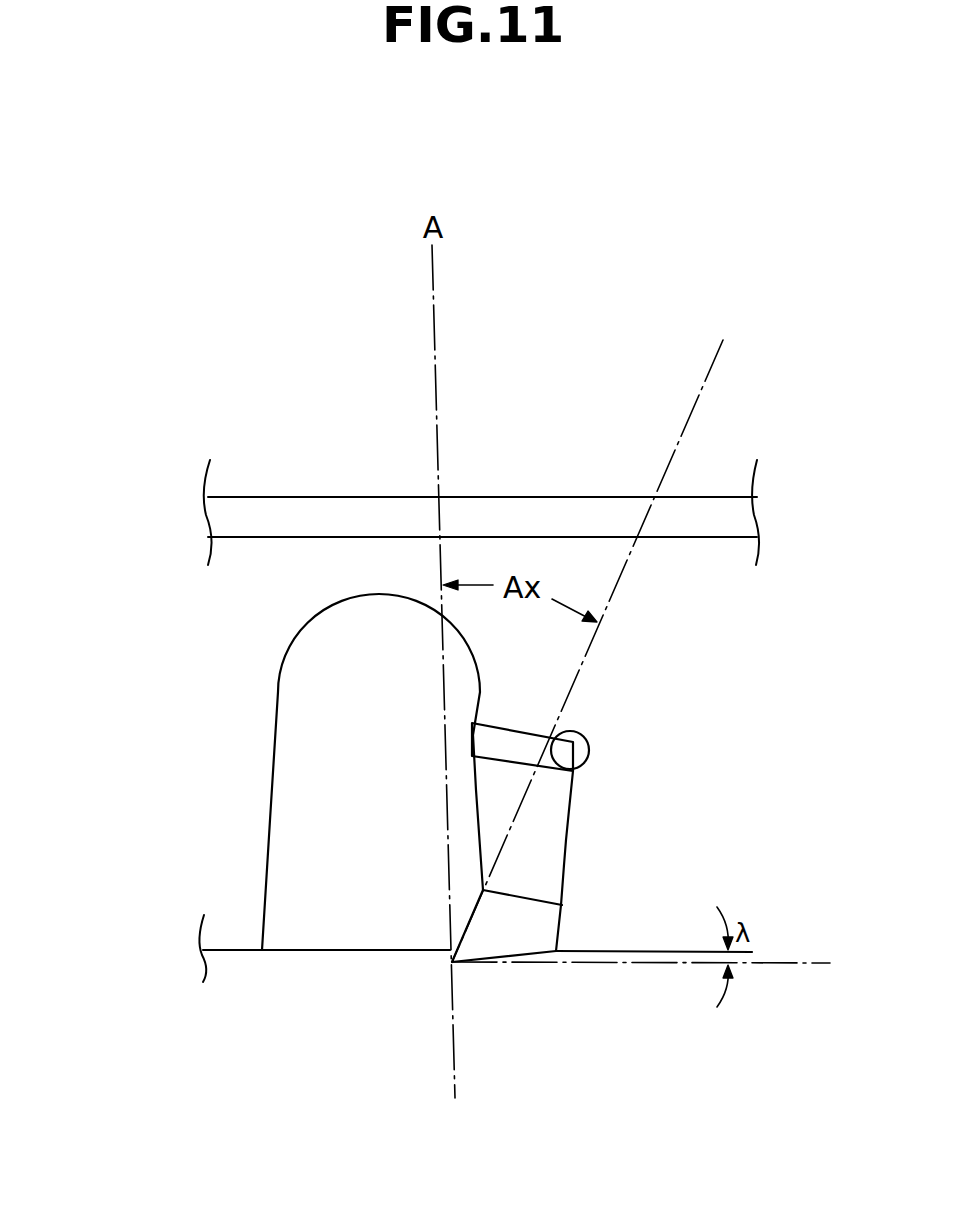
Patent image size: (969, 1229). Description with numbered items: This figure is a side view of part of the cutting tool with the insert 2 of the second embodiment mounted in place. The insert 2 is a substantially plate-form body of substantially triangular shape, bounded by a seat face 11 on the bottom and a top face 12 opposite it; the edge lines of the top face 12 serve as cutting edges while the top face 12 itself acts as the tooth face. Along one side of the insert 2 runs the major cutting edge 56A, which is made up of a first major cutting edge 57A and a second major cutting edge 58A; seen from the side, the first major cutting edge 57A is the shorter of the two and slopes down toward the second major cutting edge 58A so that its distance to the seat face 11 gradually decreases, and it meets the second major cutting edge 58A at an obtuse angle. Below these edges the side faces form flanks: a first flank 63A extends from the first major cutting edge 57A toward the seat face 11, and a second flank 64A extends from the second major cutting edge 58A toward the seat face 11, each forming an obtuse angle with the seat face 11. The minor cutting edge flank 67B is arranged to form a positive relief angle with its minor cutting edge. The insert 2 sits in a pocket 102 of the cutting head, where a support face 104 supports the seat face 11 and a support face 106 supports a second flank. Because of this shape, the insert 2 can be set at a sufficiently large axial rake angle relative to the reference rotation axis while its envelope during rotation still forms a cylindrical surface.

The insert 2 is at (555, 790).
The seat face 11 is at (565, 870).
The top face 12 is at (480, 870).
The major cutting edge 56A is at (155, 747).
The first major cutting edge 57A is at (455, 923).
The second major cutting edge 58A is at (482, 835).
The first flank 63A is at (508, 935).
The second flank 64A is at (548, 820).
The minor cutting edge flank 67B is at (555, 757).
The pocket 102 is at (563, 878).
The support face 104 is at (567, 845).
The support face 106 is at (527, 723).